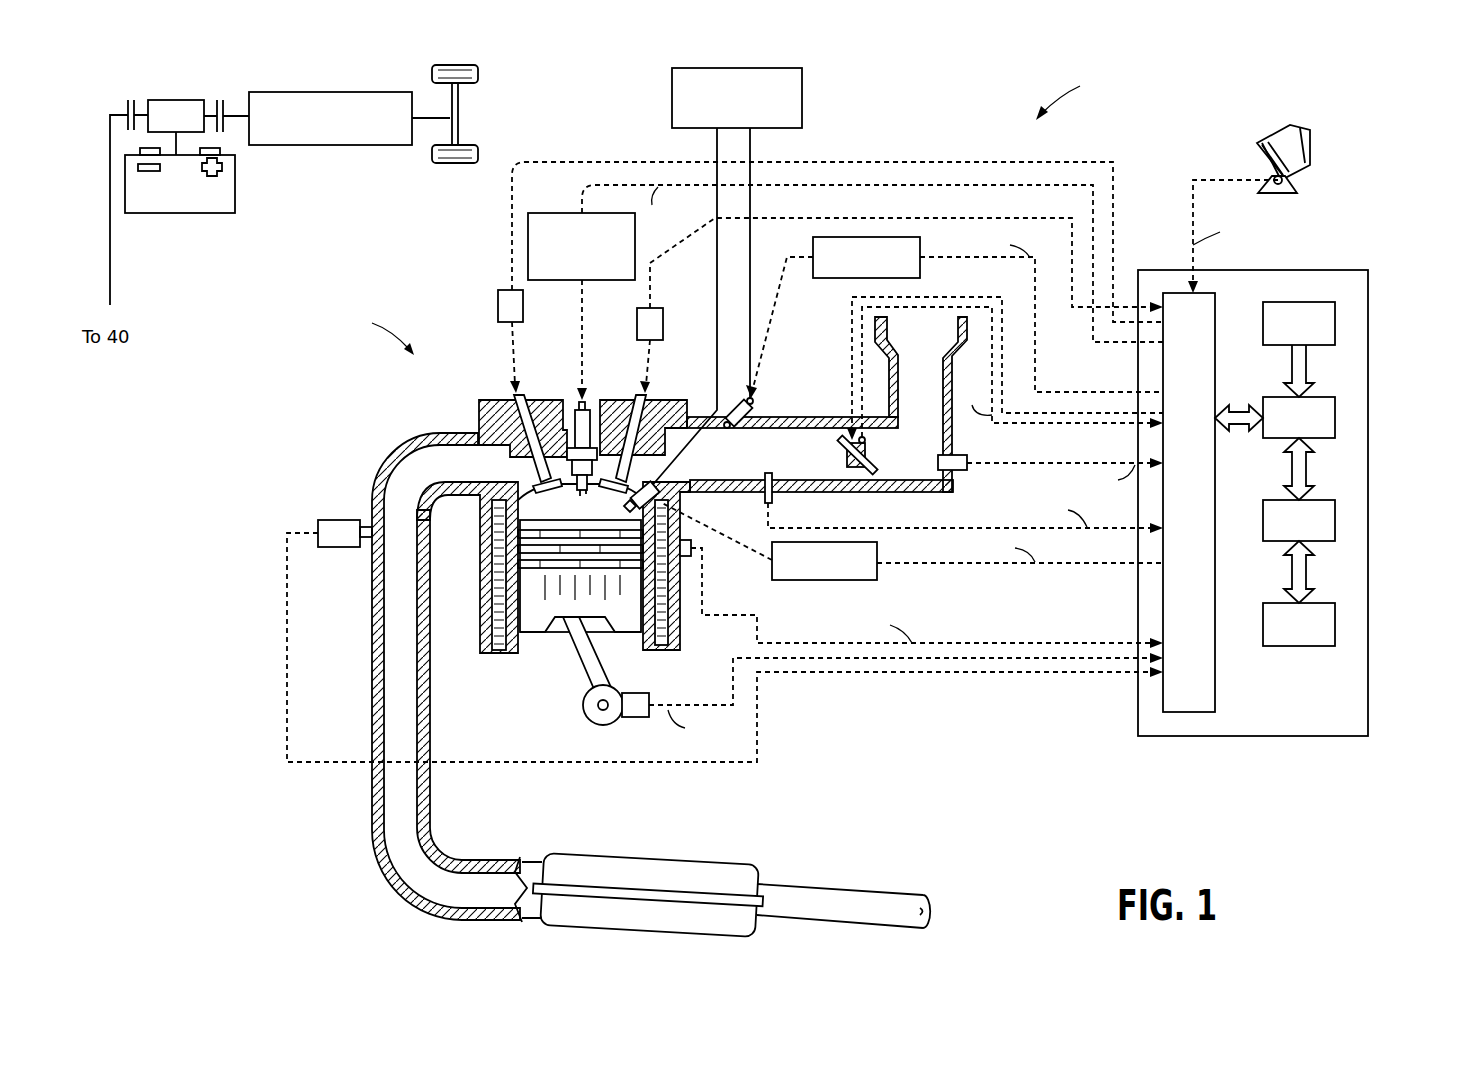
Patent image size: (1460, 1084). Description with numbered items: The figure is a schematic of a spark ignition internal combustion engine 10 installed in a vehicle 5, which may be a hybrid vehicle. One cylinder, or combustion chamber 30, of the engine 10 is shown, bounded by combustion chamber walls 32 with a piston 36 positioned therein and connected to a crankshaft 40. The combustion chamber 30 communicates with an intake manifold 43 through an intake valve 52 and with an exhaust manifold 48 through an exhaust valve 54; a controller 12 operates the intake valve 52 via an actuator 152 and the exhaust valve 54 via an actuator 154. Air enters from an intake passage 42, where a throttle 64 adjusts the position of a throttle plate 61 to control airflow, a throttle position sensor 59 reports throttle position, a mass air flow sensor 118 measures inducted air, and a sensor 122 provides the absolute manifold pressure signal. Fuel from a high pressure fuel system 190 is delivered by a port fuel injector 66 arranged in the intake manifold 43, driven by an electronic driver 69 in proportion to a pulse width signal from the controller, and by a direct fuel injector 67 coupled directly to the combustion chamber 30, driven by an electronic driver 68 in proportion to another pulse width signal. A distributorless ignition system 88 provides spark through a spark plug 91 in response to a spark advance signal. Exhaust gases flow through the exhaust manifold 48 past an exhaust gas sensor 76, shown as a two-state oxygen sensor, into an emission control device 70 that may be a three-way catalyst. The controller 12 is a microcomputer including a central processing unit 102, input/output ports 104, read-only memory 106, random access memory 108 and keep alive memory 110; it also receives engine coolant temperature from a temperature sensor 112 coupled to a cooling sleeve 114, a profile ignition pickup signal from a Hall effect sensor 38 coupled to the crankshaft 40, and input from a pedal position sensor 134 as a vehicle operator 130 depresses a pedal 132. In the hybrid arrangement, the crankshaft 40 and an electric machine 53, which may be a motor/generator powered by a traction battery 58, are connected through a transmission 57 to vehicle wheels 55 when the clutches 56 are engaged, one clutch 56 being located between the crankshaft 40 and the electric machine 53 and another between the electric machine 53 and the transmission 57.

The vehicle 5 is at (1064, 98).
The spark ignition internal combustion engine 10 is at (705, 502).
The controller 12 is at (1368, 275).
The combustion chamber 30 is at (578, 500).
The combustion chamber walls 32 is at (512, 658).
The piston 36 is at (565, 602).
The Hall effect sensor 38 is at (632, 717).
The crankshaft 40 is at (590, 722).
The intake passage 42 is at (921, 404).
The intake manifold 43 is at (820, 454).
The exhaust manifold 48 is at (457, 677).
The intake valve 52 is at (614, 440).
The electric machine 53 is at (180, 100).
The exhaust valve 54 is at (520, 455).
The vehicle wheels 55 is at (460, 163).
The clutch 56 is at (126, 106).
The transmission 57 is at (352, 145).
The traction battery 58 is at (175, 213).
The throttle position sensor 59 is at (875, 470).
The throttle plate 61 is at (856, 470).
The throttle 64 is at (850, 470).
The port fuel injector 66 is at (733, 400).
The direct fuel injector 67 is at (668, 505).
The electronic driver 68 is at (912, 541).
The electronic driver 69 is at (954, 315).
The emission control device 70 is at (692, 852).
The exhaust gas sensor 76 is at (316, 524).
The distributorless ignition system 88 is at (548, 213).
The spark plug 91 is at (585, 402).
The central processing unit 102 is at (1336, 420).
The input/output ports 104 is at (1215, 300).
The read-only memory 106 is at (1336, 320).
The random access memory 108 is at (1336, 522).
The keep alive memory 110 is at (1336, 626).
The temperature sensor 112 is at (690, 560).
The cooling sleeve 114 is at (670, 618).
The mass air flow sensor 118 is at (967, 460).
The manifold pressure sensor 122 is at (765, 490).
The vehicle operator 130 is at (1312, 143).
The pedal 132 is at (1258, 152).
The pedal position sensor 134 is at (1292, 180).
The actuator 152 is at (637, 322).
The actuator 154 is at (498, 308).
The high pressure fuel system 190 is at (726, 278).